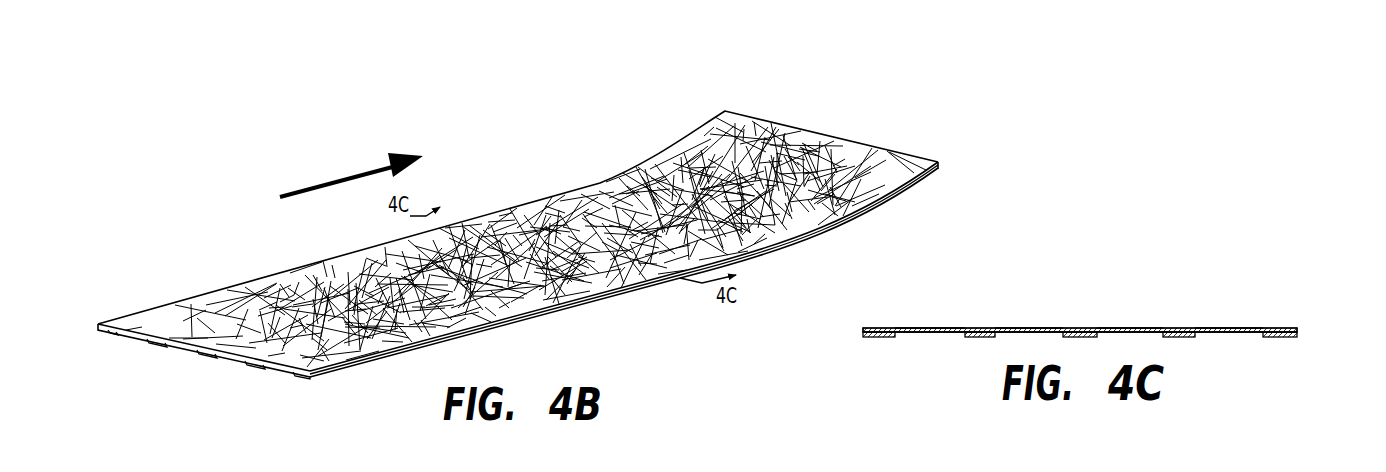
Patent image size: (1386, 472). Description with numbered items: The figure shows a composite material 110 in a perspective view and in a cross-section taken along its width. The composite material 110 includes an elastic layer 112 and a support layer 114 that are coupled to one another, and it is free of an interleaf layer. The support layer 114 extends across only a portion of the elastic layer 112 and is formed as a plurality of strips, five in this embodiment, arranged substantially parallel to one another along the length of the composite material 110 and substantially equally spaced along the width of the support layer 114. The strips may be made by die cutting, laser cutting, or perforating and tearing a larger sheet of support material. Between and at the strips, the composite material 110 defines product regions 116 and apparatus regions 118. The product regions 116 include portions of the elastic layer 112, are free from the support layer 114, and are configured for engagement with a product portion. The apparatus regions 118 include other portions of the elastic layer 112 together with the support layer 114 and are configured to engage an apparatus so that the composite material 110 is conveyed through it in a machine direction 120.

In FIG. 4B, the composite material 110 is at (859, 101).
In FIG. 4C, the composite material 110 is at (1237, 232).
In FIG. 4B, the elastic layer 112 is at (558, 213).
In FIG. 4C, the elastic layer 112 is at (938, 327).
In FIG. 4B, the support layer 114 is at (302, 379).
In FIG. 4C, the support layer 114 is at (1282, 339).
In FIG. 4C, the product regions 116 is at (1027, 325).
In FIG. 4C, the apparatus regions 118 is at (878, 325).
In FIG. 4B, the machine direction 120 is at (322, 183).